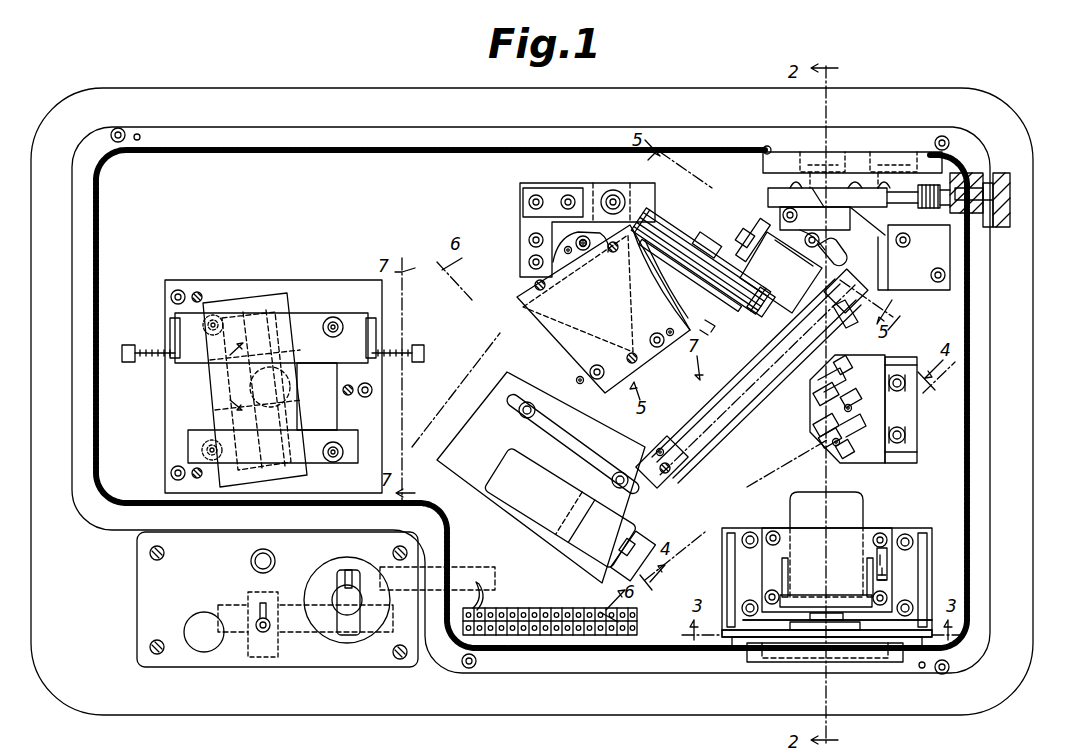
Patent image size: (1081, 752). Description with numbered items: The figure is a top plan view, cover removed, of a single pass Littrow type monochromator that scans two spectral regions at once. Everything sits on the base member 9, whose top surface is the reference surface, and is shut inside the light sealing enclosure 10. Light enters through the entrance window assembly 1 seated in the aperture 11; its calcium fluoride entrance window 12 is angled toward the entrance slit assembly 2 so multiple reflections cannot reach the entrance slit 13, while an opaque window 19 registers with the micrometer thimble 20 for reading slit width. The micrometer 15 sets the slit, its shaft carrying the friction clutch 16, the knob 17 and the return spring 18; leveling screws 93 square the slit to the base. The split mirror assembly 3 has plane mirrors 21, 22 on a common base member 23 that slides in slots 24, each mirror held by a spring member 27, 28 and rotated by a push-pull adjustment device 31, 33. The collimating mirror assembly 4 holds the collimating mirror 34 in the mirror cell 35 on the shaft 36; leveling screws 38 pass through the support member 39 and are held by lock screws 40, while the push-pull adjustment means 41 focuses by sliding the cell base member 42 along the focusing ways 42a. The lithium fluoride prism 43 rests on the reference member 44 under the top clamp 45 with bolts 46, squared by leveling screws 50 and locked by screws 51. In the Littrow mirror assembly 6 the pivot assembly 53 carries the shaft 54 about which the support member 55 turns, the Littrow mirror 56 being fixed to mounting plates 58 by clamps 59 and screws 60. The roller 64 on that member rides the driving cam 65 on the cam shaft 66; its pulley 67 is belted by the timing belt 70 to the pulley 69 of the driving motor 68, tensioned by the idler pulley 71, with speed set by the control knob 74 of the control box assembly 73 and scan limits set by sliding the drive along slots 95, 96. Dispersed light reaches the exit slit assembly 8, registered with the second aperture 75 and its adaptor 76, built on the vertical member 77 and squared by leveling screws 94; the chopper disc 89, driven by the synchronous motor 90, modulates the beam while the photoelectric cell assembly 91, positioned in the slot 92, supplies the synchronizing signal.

The entrance window assembly 1 is at (910, 193).
The entrance slit assembly 2 is at (758, 184).
The split mirror assembly 3 is at (868, 390).
The collimating mirror assembly 4 is at (273, 380).
The Littrow mirror assembly 6 is at (693, 251).
The exit slit assembly 8 is at (832, 593).
The base member 9 is at (950, 94).
The enclosure 10 is at (950, 160).
The aperture 11 is at (770, 148).
The entrance window 12 is at (830, 165).
The entrance slit 13 is at (828, 239).
The micrometer 15 is at (928, 219).
The friction clutch 16 is at (975, 180).
The knob 17 is at (1013, 200).
The spring 18 is at (988, 214).
The window 19 is at (885, 168).
The micrometer thimble 20 is at (858, 160).
The plane mirror 21 is at (818, 397).
The plane mirror 22 is at (818, 424).
The common base member 23 is at (917, 422).
The slots 24 is at (897, 392).
The spring member 27 is at (858, 402).
The spring member 28 is at (820, 438).
The push-pull adjustment device 31 is at (857, 367).
The push-pull adjustment device 33 is at (858, 440).
The collimating mirror 34 is at (268, 327).
The mirror cell 35 is at (230, 300).
The shaft 36 is at (288, 382).
The leveling screws 38 is at (198, 292).
The support member 39 is at (323, 280).
The lock screws 40 is at (178, 290).
The push-pull adjustment means 41 is at (136, 362).
The cell base member 42 is at (330, 398).
The focusing ways 42a is at (230, 355).
The lithium fluoride prism 43 is at (577, 330).
The reference member 44 is at (587, 314).
The top clamp 45 is at (630, 390).
The bolts 46 is at (535, 286).
The leveling screws 50 is at (578, 252).
The screws 51 is at (586, 250).
The pivot assembly 53 is at (640, 190).
The shaft 54 is at (613, 190).
The support member 55 is at (660, 205).
The Littrow mirror 56 is at (700, 282).
The mounting plates 58 is at (760, 318).
The clamps 59 is at (645, 245).
The screws 60 is at (614, 254).
The roller 64 is at (708, 236).
The driving cam 65 is at (750, 225).
The cam shaft 66 is at (790, 312).
The pulley 67 is at (852, 312).
The driving motor 68 is at (522, 446).
The pulley 69 is at (650, 572).
The timing belt 70 is at (752, 378).
The idler pulley 71 is at (705, 482).
The control box assembly 73 is at (316, 615).
The control knob 74 is at (351, 640).
The second aperture 75 is at (738, 650).
The adaptor 76 is at (760, 662).
The vertical member 77 is at (918, 630).
The chopper disc 89 is at (903, 628).
The synchronous motor 90 is at (858, 508).
The photoelectric cell assembly 91 is at (888, 574).
The slot 92 is at (888, 558).
The leveling screws 93 is at (932, 276).
The leveling screws 94 is at (752, 532).
The slot 95 is at (836, 265).
The slot 96 is at (578, 440).